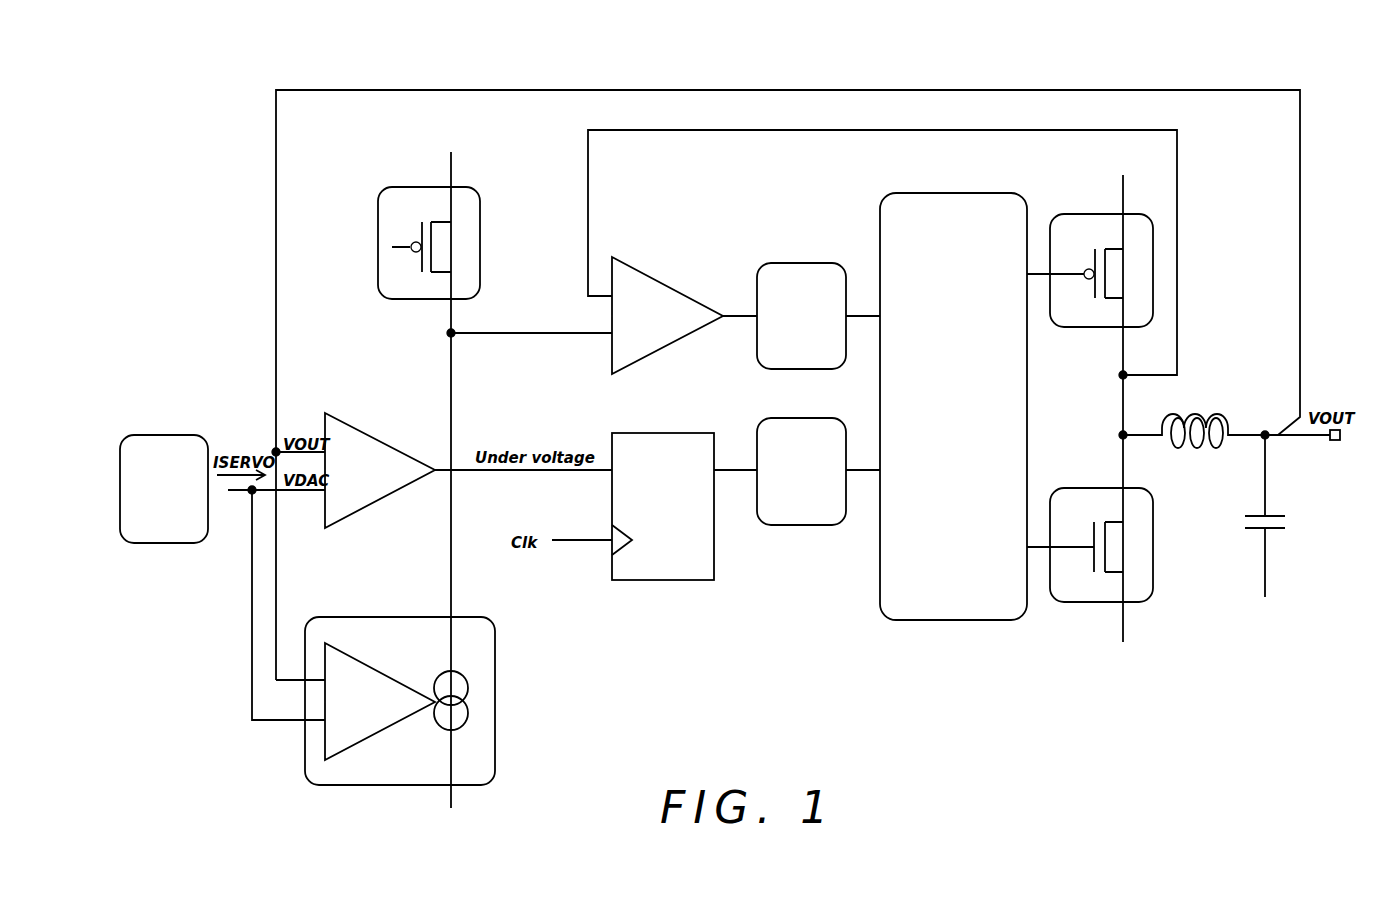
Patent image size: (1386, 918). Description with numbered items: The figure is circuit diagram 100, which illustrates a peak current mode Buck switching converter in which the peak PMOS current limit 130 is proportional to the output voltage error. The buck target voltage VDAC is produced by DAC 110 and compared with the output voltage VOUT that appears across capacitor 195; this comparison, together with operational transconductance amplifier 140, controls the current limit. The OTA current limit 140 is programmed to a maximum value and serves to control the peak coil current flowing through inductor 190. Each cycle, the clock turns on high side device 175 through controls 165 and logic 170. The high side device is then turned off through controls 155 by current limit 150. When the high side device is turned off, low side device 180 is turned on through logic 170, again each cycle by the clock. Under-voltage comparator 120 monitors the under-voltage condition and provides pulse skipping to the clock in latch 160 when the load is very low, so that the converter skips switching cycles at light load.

The circuit diagram 100 is at (733, 55).
The DAC 110 is at (172, 435).
The under-voltage comparator 120 is at (356, 425).
The peak PMOS current limit 130 is at (432, 187).
The operational transconductance amplifier (OTA) 140 is at (373, 617).
The current limit 150 is at (653, 278).
The controls 155 is at (817, 263).
The latch 160 is at (665, 433).
The controls 165 is at (815, 418).
The logic 170 is at (937, 193).
The high side device 175 is at (1105, 214).
The low side device 180 is at (1103, 488).
The inductor 190 is at (1186, 416).
The capacitor 195 is at (1275, 516).